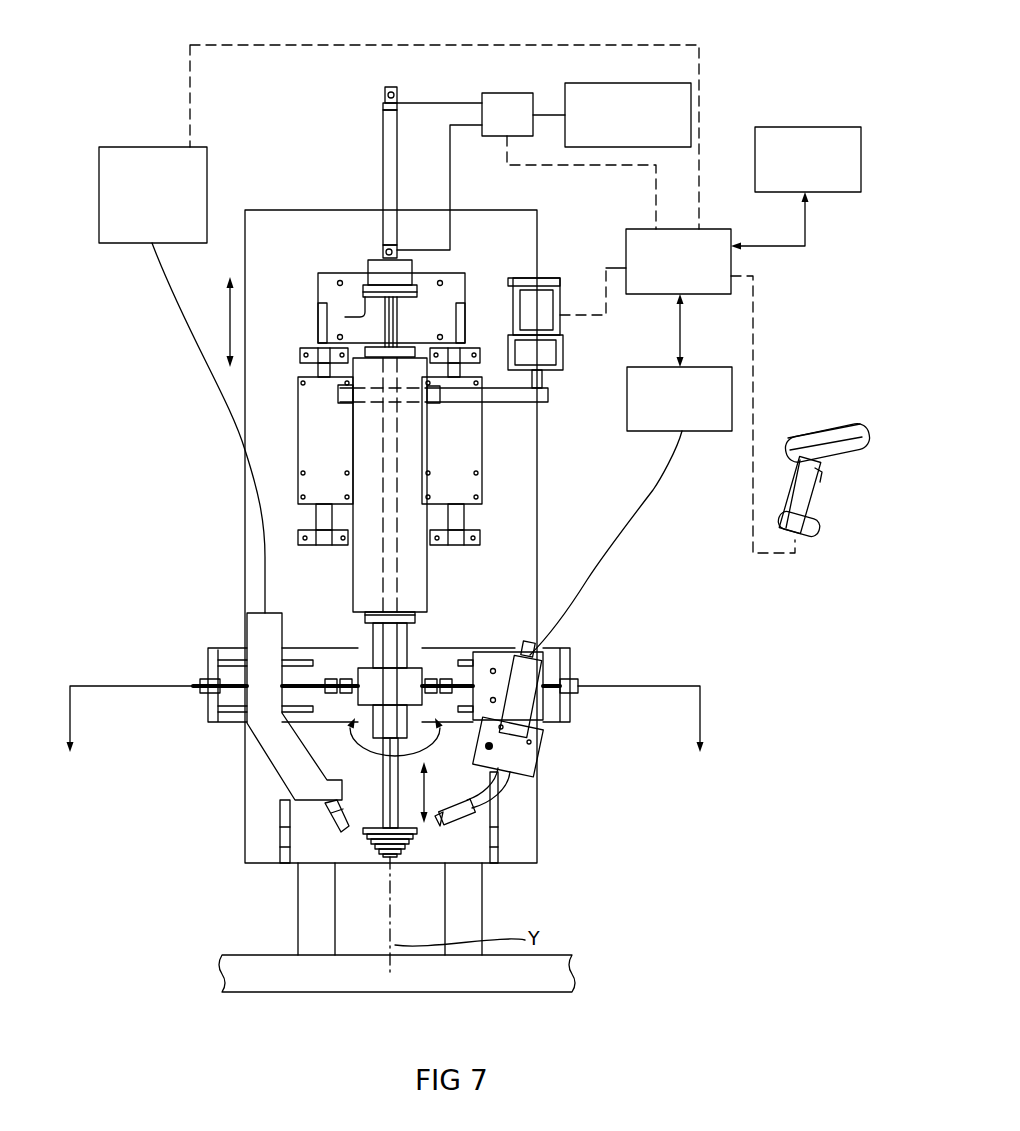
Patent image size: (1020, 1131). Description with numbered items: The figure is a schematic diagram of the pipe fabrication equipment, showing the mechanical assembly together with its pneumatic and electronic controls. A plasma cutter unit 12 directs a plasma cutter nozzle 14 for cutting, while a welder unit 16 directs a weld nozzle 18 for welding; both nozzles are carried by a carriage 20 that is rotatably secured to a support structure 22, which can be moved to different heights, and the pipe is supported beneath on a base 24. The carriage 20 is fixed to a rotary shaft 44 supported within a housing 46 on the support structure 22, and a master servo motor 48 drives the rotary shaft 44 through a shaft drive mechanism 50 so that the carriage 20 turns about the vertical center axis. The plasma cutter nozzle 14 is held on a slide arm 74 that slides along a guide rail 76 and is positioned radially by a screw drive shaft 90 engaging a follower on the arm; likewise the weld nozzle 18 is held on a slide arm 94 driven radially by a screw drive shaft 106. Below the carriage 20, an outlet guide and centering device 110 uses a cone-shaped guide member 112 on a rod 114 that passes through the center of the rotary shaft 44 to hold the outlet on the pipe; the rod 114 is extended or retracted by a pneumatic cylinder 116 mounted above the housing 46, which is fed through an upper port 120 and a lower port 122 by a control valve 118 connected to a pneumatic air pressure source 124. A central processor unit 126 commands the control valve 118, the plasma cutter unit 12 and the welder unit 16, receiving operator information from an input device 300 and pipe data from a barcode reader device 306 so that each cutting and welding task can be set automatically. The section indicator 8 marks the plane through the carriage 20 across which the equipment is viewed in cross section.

The section line 8 is at (383, 738).
The plasma cutter unit 12 is at (138, 141).
The plasma cutter nozzle 14 is at (333, 828).
The welder unit 16 is at (689, 457).
The weld nozzle 18 is at (458, 815).
The carriage 20 is at (208, 655).
The support structure 22 is at (298, 210).
The base 24 is at (572, 955).
The rotary shaft 44 is at (405, 641).
The housing 46 is at (415, 565).
The master servo motor 48 is at (555, 278).
The shaft drive mechanism 50 is at (502, 418).
The slide arm 74 is at (282, 765).
The guide rail 76 is at (210, 715).
The screw drive shaft 90 is at (236, 684).
The slide arm 94 is at (538, 718).
The screw drive shaft 106 is at (560, 650).
The outlet guide and centering device 110 is at (419, 857).
The cone-shaped guide member 112 is at (383, 850).
The rod 114 is at (360, 835).
The pneumatic cylinder 116 is at (385, 167).
The control valve 118 is at (507, 93).
The upper port 120 is at (387, 102).
The lower port 122 is at (385, 250).
The pneumatic air pressure source 124 is at (668, 83).
The central processor unit 126 is at (700, 229).
The input device 300 is at (805, 127).
The barcode reader device 306 is at (820, 432).